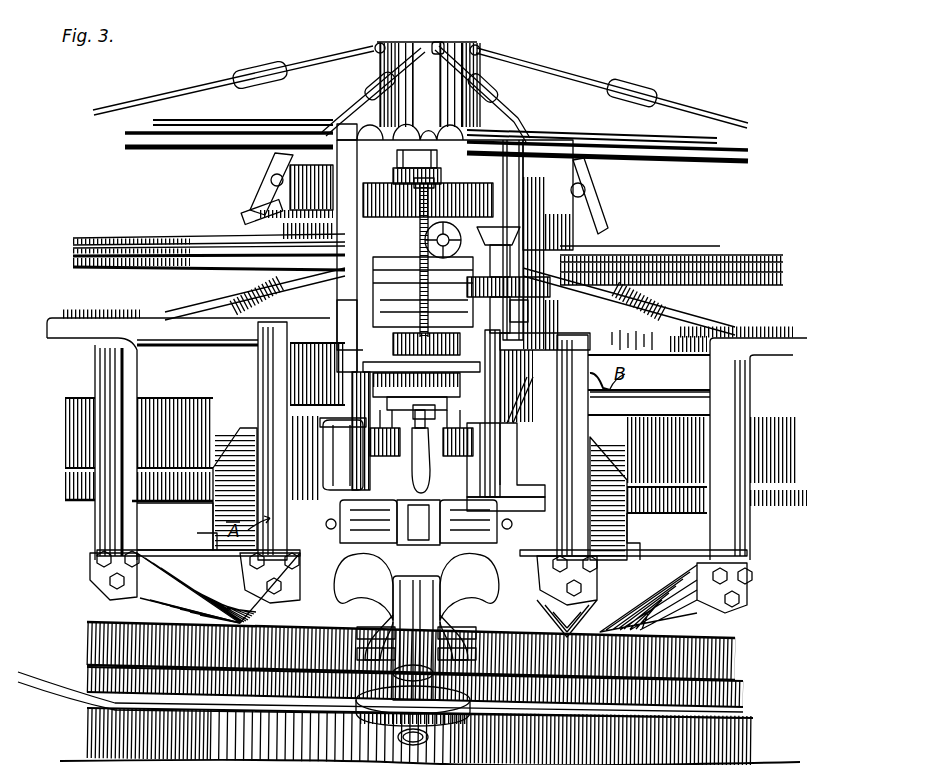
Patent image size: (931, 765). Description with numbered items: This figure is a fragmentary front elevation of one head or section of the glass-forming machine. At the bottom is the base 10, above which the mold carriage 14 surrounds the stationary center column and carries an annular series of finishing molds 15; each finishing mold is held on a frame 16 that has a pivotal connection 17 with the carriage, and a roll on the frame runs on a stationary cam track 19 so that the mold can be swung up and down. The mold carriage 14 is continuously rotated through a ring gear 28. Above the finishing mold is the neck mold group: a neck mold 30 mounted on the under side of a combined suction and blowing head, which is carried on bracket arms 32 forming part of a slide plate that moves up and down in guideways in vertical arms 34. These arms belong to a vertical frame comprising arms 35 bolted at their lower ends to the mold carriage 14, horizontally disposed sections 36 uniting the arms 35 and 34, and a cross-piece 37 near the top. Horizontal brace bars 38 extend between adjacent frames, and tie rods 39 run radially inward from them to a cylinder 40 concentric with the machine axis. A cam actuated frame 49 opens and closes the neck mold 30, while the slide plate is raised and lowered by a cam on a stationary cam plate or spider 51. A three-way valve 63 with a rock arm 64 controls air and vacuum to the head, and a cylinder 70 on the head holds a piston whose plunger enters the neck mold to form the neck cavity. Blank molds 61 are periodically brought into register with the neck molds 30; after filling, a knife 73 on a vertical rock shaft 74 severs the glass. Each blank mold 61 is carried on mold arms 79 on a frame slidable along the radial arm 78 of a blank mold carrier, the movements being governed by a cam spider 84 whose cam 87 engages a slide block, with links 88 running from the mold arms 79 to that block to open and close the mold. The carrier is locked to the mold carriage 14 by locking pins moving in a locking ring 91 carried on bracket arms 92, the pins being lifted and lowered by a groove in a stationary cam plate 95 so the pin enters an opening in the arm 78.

The base 10 is at (713, 697).
The mold carriage 14 is at (180, 552).
The finishing molds 15 is at (416, 606).
The frame 16 is at (395, 712).
The pivotal connection 17 is at (340, 510).
The cam track 19 is at (280, 716).
The ring gear 28 is at (128, 624).
The neck mold 30 is at (430, 456).
The bracket arms 32 is at (358, 340).
The vertical arms 34 is at (357, 238).
The arms 35 is at (270, 388).
The horizontally disposed sections 36 is at (265, 325).
The cross-piece 37 is at (505, 176).
The horizontal brace bars 38 is at (214, 143).
The tie rods 39 is at (190, 92).
The cylinder 40 is at (440, 44).
The cam actuated frame 49 is at (403, 390).
The cam plate or spider 51 is at (730, 253).
The blank molds 61 is at (352, 484).
The three-way valve 63 is at (393, 178).
The rock arm 64 is at (395, 158).
The cylinder 70 is at (440, 346).
The knife 73 is at (517, 514).
The vertical rock shaft 74 is at (507, 346).
The arm 78 is at (657, 399).
The mold arms 79 is at (385, 453).
The cam spider 84 is at (231, 298).
The cam 87 is at (205, 338).
The links 88 is at (348, 417).
The locking ring 91 is at (188, 415).
The bracket arms 92 is at (238, 446).
The cam plate 95 is at (660, 522).